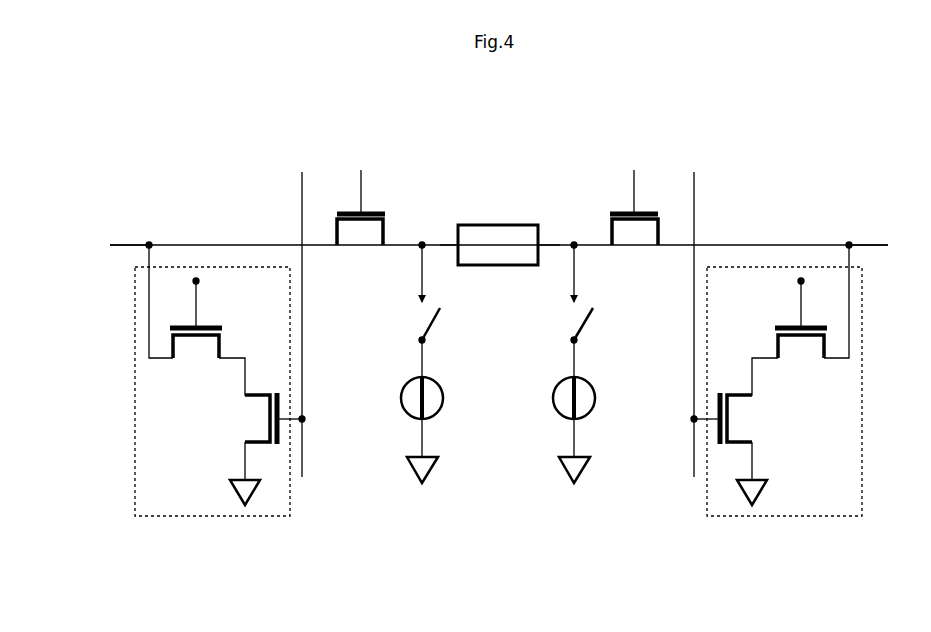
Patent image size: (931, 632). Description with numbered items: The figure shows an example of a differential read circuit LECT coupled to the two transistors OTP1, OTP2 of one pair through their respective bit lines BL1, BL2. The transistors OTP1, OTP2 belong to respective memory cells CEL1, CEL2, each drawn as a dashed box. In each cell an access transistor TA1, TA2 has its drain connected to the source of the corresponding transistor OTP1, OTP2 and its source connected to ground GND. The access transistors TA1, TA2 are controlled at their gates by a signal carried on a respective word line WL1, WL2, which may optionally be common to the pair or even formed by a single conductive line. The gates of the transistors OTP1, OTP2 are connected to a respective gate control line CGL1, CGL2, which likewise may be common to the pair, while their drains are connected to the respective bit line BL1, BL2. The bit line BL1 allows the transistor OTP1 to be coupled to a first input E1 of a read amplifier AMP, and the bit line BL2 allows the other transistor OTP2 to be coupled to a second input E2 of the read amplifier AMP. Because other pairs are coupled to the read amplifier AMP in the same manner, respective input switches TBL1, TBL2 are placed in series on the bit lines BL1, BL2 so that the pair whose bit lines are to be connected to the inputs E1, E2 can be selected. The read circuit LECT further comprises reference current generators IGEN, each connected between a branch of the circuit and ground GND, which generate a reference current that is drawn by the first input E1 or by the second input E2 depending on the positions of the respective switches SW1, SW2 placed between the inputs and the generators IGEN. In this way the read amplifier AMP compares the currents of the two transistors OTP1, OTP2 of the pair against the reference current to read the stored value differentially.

The bit line BL1 is at (123, 242).
The bit line BL2 is at (877, 242).
The word line WL1 is at (299, 242).
The word line WL2 is at (696, 242).
The input switch TBL1 is at (381, 186).
The input switch TBL2 is at (616, 186).
The differential read circuit LECT is at (522, 158).
The read amplifier AMP is at (498, 245).
The first input E1 is at (457, 242).
The second input E2 is at (541, 242).
The switch SW1 is at (435, 322).
The switch SW2 is at (587, 322).
The reference current generator IGEN is at (399, 398).
The ground GND is at (407, 470).
The memory cell CEL1 is at (211, 517).
The memory cell CEL2 is at (784, 517).
The gate control line CGL1 is at (199, 282).
The gate control line CGL2 is at (796, 282).
The transistor OTP1 is at (191, 360).
The transistor OTP2 is at (805, 360).
The access transistor TA1 is at (241, 437).
The access transistor TA2 is at (756, 437).